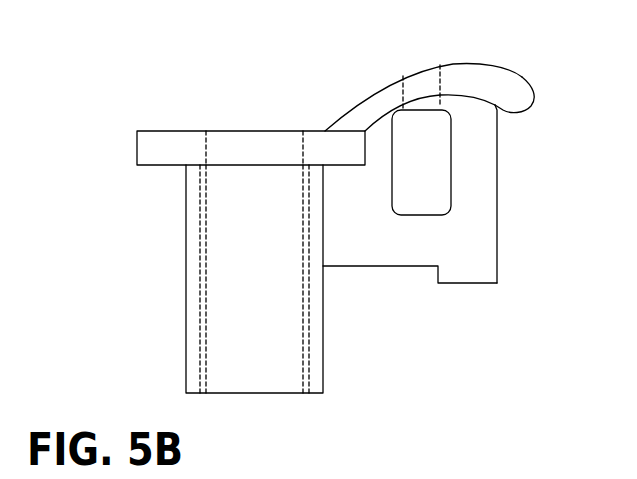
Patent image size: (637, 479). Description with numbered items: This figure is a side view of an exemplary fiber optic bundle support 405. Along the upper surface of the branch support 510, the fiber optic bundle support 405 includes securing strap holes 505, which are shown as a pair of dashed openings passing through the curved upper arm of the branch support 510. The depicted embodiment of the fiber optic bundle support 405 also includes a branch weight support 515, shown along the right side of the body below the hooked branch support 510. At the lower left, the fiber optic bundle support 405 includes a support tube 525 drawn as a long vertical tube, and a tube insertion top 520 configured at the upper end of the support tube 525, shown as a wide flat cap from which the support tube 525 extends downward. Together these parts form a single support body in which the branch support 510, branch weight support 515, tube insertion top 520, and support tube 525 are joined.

The fiber optic bundle support 405 is at (107, 194).
The securing strap holes 505 is at (422, 67).
The branch support 510 is at (518, 78).
The branch weight support 515 is at (497, 208).
The tube insertion top 520 is at (158, 166).
The support tube 525 is at (186, 270).